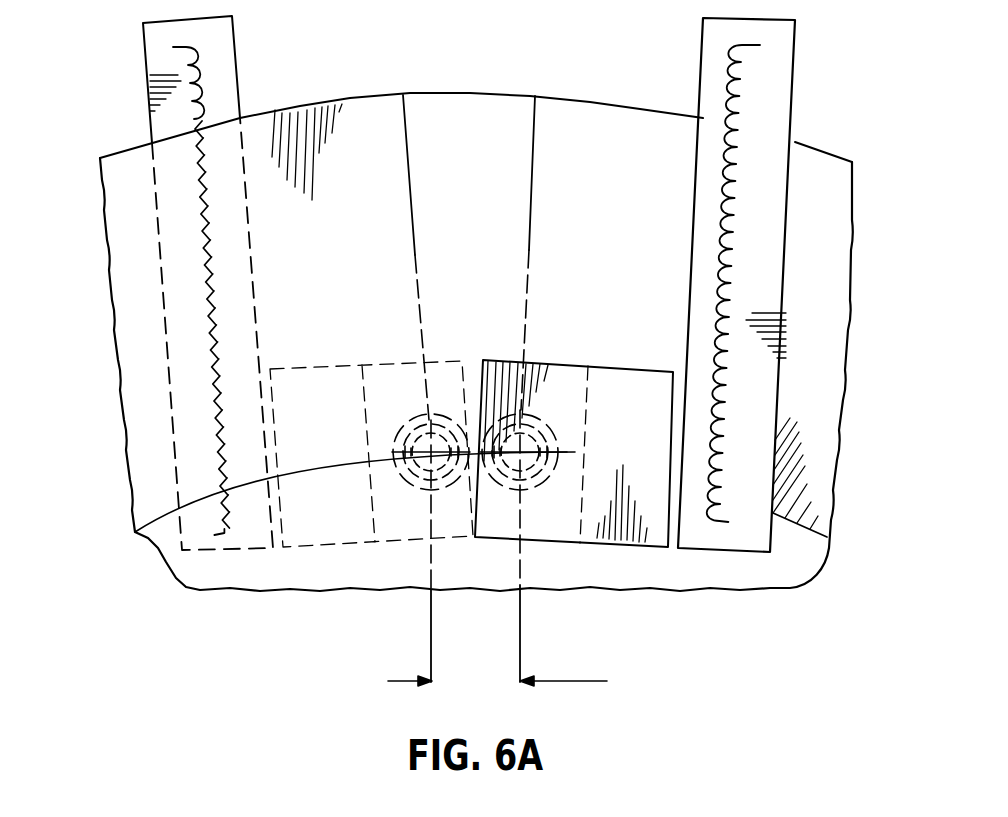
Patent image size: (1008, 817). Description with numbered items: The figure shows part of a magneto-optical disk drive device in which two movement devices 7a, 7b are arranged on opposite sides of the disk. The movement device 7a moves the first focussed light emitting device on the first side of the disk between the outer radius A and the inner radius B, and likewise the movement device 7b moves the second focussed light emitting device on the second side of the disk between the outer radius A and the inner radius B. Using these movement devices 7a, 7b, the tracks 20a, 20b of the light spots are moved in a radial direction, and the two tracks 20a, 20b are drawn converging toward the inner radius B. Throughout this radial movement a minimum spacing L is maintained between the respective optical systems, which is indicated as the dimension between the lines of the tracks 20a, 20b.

The movement device 7a is at (168, 62).
The movement device 7b is at (767, 70).
The track of the light spot 20a is at (409, 182).
The track of the light spot 20b is at (536, 212).
The outer radius A is at (80, 168).
The inner radius B is at (112, 541).
The minimum spacing L is at (585, 660).